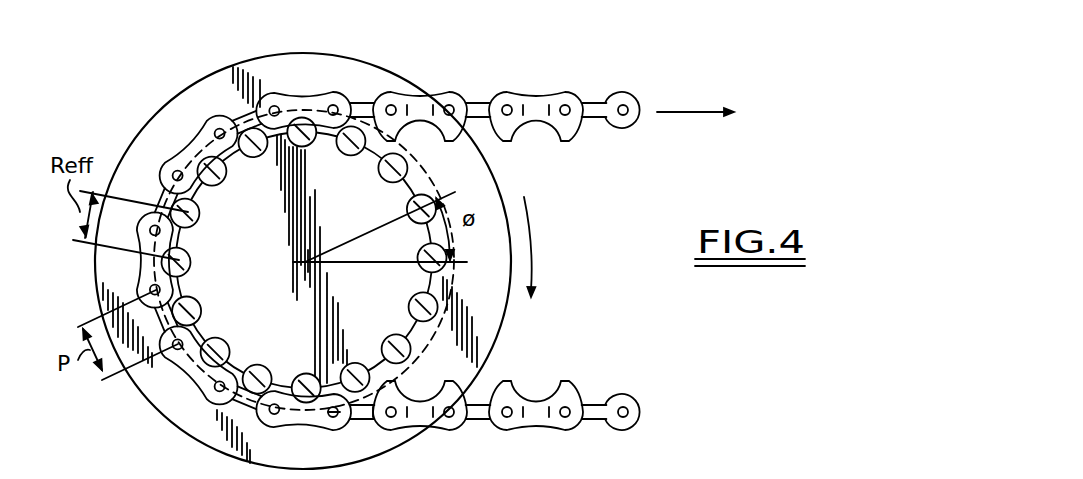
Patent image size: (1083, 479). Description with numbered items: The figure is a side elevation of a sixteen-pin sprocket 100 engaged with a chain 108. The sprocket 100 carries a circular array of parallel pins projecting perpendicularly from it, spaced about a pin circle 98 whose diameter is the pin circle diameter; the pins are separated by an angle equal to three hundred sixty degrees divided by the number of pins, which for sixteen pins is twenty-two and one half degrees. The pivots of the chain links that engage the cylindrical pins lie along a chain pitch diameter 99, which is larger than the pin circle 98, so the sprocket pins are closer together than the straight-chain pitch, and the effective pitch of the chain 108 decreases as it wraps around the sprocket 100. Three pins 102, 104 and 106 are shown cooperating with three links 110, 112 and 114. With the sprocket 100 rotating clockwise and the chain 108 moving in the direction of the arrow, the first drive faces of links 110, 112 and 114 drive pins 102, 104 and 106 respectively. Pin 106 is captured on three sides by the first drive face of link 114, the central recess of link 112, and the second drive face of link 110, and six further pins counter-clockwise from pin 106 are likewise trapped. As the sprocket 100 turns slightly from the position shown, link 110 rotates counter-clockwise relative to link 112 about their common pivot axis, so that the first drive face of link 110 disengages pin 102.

The pin circle 98 is at (427, 175).
The chain pitch diameter 99 is at (427, 347).
The sprocket 100 is at (503, 209).
The pin 102 is at (354, 125).
The pin 104 is at (317, 147).
The pin 106 is at (256, 151).
The chain 108 is at (450, 89).
The link 110 is at (300, 105).
The link 112 is at (240, 113).
The link 114 is at (193, 150).